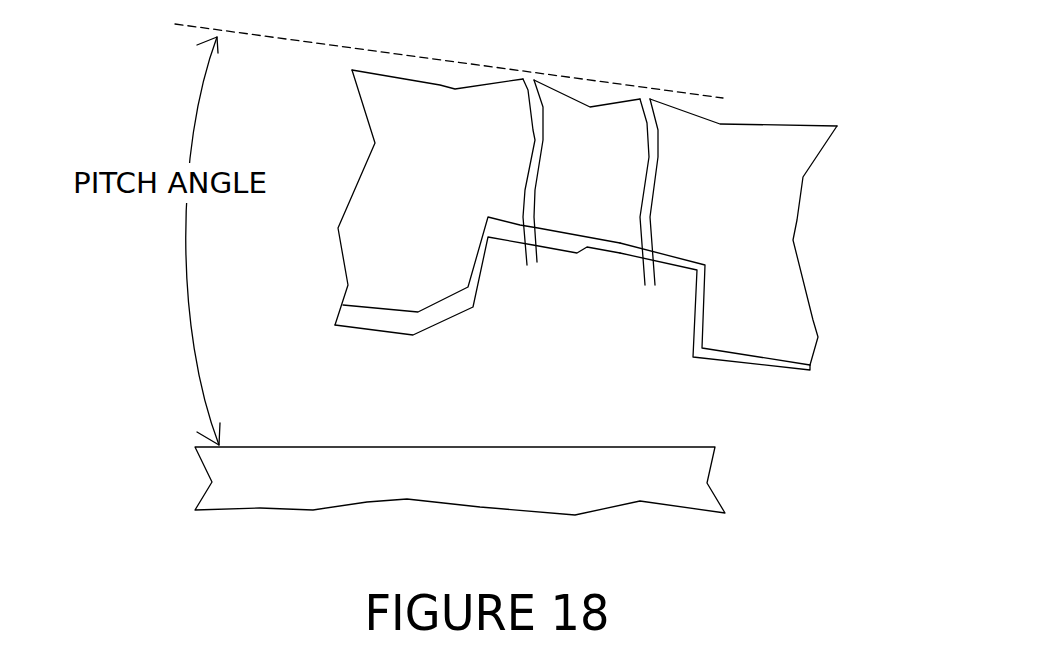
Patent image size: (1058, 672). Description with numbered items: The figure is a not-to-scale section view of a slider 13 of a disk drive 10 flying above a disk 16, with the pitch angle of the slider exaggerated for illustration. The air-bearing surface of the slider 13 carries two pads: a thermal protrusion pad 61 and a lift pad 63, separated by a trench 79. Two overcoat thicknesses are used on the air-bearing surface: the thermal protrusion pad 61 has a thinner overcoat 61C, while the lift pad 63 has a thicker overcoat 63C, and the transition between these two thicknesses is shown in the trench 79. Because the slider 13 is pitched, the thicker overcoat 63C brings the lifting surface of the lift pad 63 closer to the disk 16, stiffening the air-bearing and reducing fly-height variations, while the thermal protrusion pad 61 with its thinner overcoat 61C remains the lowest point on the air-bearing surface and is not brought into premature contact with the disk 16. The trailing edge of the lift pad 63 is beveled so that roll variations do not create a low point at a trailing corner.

The disk drive 10 is at (782, 90).
The slider 13 is at (323, 143).
The disk 16 is at (493, 498).
The thermal protrusion pad 61 is at (800, 317).
The thinner overcoat 61C is at (720, 357).
The lift pad 63 is at (368, 265).
The thicker overcoat 63C is at (382, 323).
The trench 79 is at (567, 315).